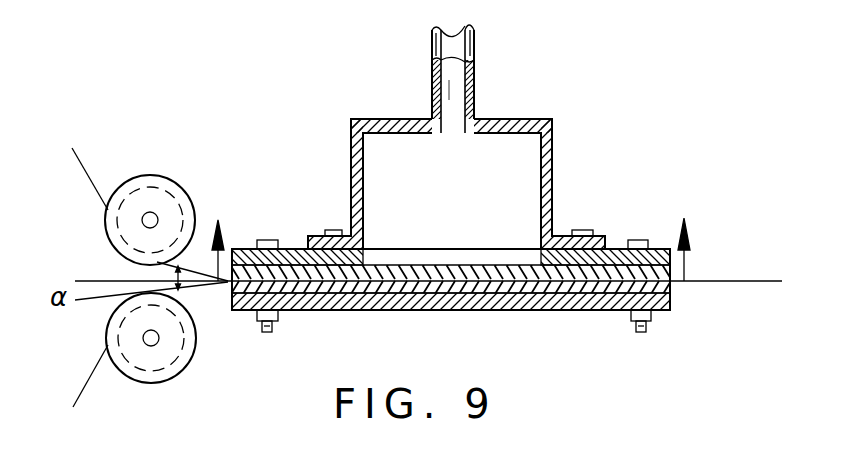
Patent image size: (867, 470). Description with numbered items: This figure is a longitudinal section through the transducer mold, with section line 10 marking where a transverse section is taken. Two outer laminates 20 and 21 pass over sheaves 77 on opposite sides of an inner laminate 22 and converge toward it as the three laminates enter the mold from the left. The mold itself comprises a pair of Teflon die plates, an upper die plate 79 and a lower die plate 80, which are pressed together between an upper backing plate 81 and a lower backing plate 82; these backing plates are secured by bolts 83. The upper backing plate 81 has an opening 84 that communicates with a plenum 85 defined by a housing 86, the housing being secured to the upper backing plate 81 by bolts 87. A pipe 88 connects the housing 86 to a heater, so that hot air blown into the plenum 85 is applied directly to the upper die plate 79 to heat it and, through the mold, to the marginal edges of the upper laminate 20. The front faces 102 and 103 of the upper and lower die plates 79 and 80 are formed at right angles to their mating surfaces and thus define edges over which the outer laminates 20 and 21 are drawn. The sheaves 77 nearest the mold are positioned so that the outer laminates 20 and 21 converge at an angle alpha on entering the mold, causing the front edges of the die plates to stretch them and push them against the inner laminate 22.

The section line 10— 10 is at (454, 236).
The outer laminate 20 is at (80, 163).
The outer laminate 21 is at (88, 390).
The inner laminate 22 is at (85, 280).
The sheaves 77 is at (161, 179).
The upper die plate 79 is at (671, 272).
The lower die plate 80 is at (671, 288).
The upper backing plate 81 is at (659, 249).
The lower backing plate 82 is at (657, 311).
The bolts 83 is at (270, 240).
The opening 84 is at (541, 248).
The plenum 85 is at (512, 158).
The housing 86 is at (351, 138).
The bolts 87 is at (331, 230).
The pipe 88 is at (474, 43).
The front face of upper die plate 102 is at (229, 272).
The front face of lower die plate 103 is at (228, 291).